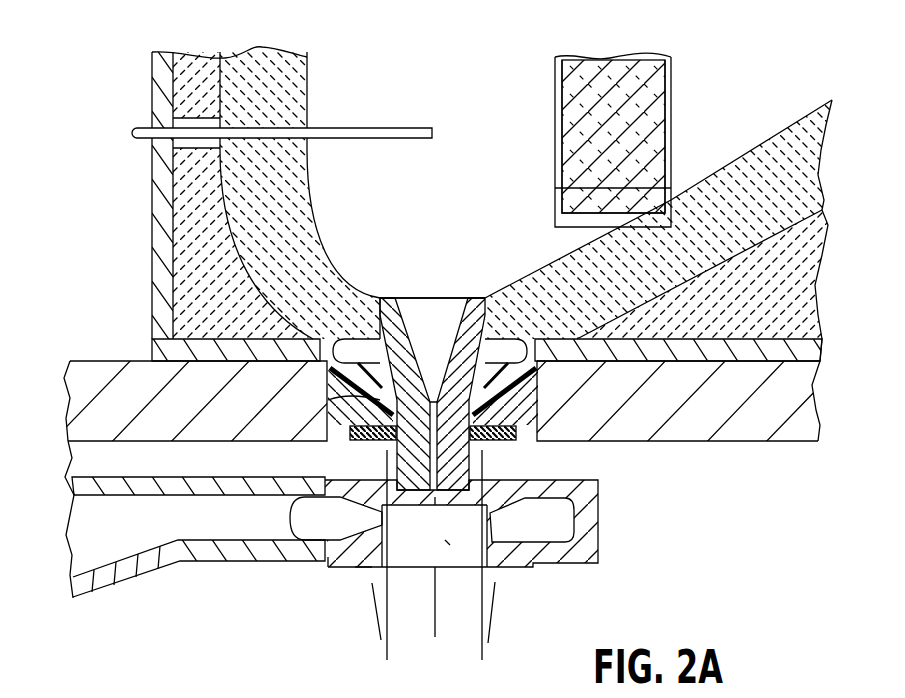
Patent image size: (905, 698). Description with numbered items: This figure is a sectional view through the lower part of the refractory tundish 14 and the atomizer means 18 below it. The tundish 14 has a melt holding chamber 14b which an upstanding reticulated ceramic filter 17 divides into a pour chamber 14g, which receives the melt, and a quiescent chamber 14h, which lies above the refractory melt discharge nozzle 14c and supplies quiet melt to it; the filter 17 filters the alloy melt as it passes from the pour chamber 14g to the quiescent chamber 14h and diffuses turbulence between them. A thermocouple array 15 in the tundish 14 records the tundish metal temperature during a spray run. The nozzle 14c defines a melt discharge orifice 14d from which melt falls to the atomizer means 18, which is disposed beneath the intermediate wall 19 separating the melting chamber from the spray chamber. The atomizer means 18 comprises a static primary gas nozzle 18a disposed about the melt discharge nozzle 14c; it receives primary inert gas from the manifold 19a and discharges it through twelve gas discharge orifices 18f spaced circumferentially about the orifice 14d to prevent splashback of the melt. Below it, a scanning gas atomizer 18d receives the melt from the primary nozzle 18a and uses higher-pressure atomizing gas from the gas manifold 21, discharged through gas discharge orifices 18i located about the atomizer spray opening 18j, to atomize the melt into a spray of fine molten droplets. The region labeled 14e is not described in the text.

The refractory tundish 14 is at (152, 232).
The melt holding chamber 14b is at (773, 57).
The refractory melt discharge nozzle 14c is at (455, 300).
The melt discharge orifice 14d is at (430, 497).
The body wedge portion 14e is at (810, 125).
The pour chamber 14g is at (770, 107).
The quiescent chamber 14h is at (443, 233).
The thermocouple array 15 is at (342, 138).
The reticulated ceramic filter 17 is at (603, 60).
The atomizer means 18 is at (603, 541).
The static primary gas nozzle 18a is at (366, 443).
The scanning gas atomizer 18d is at (346, 577).
The gas discharge orifices 18f is at (343, 393).
The gas discharge orifices 18i is at (362, 568).
The atomizer spray opening 18j is at (447, 543).
The intermediate wall 19 is at (703, 430).
The manifold 19a is at (345, 363).
The gas manifold 21 is at (112, 531).